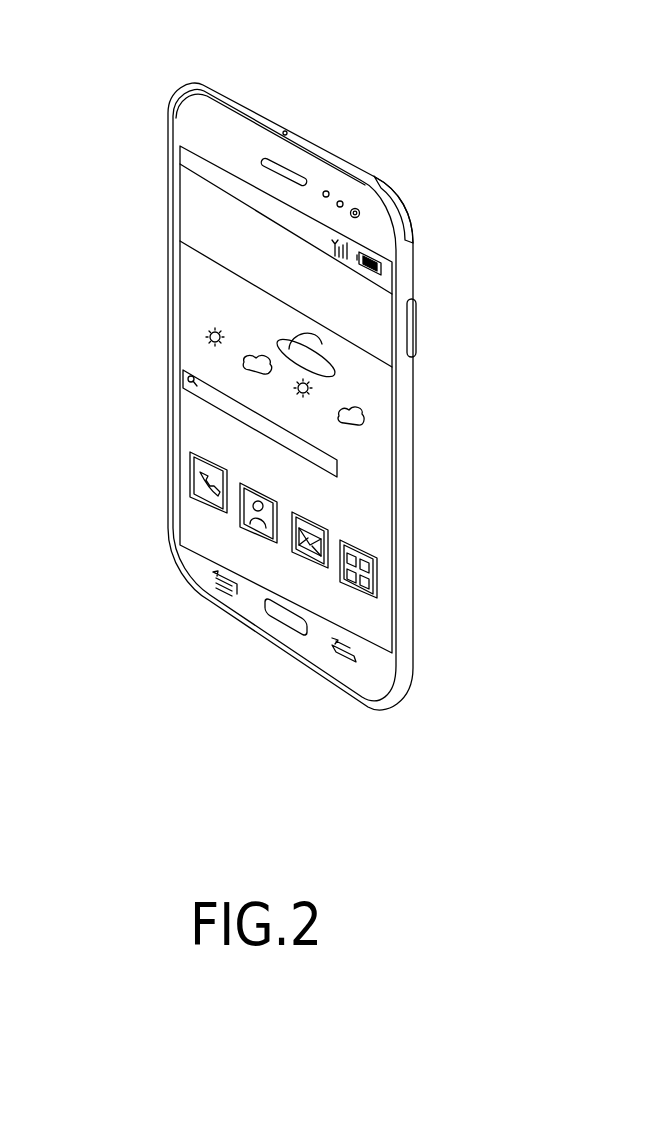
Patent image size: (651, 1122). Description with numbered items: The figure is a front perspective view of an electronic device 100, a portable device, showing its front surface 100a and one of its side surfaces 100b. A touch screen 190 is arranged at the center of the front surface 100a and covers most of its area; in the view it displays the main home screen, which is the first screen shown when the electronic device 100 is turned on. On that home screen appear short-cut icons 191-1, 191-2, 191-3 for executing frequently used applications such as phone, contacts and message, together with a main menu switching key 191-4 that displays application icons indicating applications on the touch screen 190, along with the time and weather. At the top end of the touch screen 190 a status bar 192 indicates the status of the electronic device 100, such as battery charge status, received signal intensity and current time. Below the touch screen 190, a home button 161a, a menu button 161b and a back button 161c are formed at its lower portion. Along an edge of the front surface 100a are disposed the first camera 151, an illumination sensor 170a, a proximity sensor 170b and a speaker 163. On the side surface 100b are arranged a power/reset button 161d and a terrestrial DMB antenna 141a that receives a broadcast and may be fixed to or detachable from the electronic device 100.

The electronic device 100 is at (284, 390).
The front surface 100a is at (185, 126).
The side surface 100b is at (407, 439).
The terrestrial DMB antenna 141a is at (400, 205).
The first camera 151 is at (355, 209).
The home button 161a is at (289, 618).
The menu button 161b is at (213, 577).
The back button 161c is at (345, 653).
The power/reset button 161d is at (415, 326).
The speaker 163 is at (260, 156).
The illumination sensor 170a is at (326, 190).
The proximity sensor 170b is at (340, 201).
The touch screen 190 is at (219, 399).
The short-cut icon 191-1 is at (207, 462).
The short-cut icon 191-2 is at (252, 480).
The short-cut icon 191-3 is at (320, 520).
The main menu switching key 191-4 is at (360, 550).
The status bar 192 is at (187, 164).